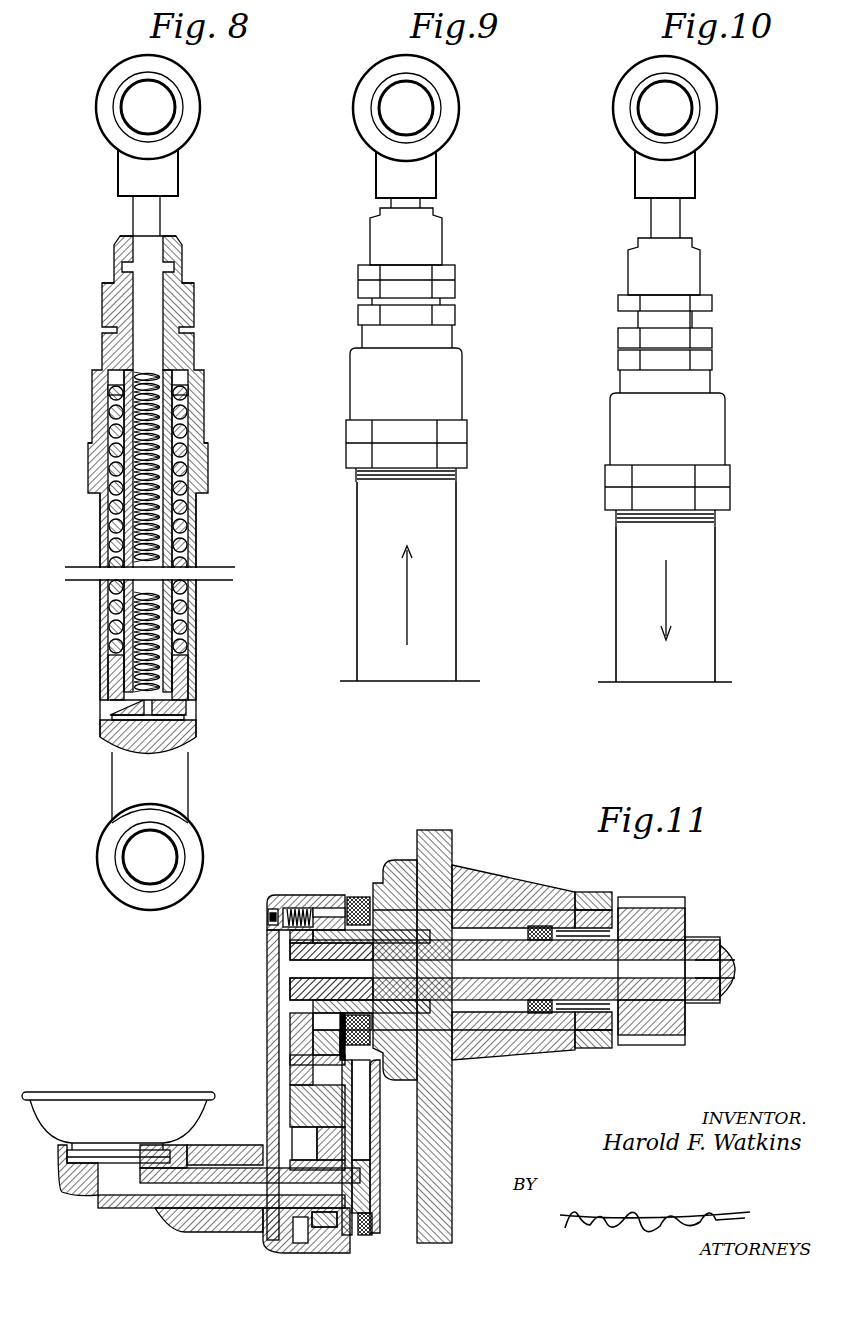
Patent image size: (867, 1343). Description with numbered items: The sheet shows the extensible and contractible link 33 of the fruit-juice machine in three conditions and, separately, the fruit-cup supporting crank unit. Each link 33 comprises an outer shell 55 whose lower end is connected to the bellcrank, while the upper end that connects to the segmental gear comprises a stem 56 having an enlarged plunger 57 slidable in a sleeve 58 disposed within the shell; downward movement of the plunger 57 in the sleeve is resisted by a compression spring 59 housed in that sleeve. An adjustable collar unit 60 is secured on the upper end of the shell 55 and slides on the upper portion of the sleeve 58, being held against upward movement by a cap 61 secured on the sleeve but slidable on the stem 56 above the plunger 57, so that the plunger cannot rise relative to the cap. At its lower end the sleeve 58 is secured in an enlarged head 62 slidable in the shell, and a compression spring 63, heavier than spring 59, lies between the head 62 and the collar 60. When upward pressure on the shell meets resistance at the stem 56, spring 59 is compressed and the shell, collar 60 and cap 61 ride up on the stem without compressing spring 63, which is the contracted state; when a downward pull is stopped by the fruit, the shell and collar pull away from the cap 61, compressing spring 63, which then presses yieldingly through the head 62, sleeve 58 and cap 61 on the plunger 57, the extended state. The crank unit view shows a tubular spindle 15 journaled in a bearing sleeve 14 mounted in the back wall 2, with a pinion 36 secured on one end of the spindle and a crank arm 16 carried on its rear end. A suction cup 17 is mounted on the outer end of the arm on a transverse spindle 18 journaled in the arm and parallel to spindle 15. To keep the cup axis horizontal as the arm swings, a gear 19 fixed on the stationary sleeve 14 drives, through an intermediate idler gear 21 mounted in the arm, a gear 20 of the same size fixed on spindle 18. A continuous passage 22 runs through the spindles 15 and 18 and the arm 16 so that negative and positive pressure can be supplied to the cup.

In FIG. 11, the transverse back wall 2 is at (452, 1142).
In FIG. 11, the bearing sleeve 14 is at (490, 910).
In FIG. 11, the tubular spindle 15 is at (583, 1030).
In FIG. 11, the crank arm 16 is at (290, 1118).
In FIG. 11, the suction cup 17 is at (108, 1110).
In FIG. 11, the transverse spindle 18 is at (158, 1208).
In FIG. 11, the gear 19 is at (325, 910).
In FIG. 11, the gear 20 is at (353, 1223).
In FIG. 11, the intermediate idler gear 21 is at (318, 1118).
In FIG. 11, the continuous passage 22 is at (262, 1150).
In FIG. 8, the upstanding link 33 is at (175, 788).
In FIG. 9, the upstanding link 33 is at (458, 618).
In FIG. 10, the upstanding link 33 is at (718, 628).
In FIG. 11, the pinion 36 is at (670, 918).
In FIG. 8, the outer shell 55 is at (198, 620).
In FIG. 9, the outer shell 55 is at (428, 540).
In FIG. 10, the outer shell 55 is at (700, 575).
In FIG. 8, the stem 56 is at (157, 216).
In FIG. 9, the stem 56 is at (418, 204).
In FIG. 10, the stem 56 is at (670, 220).
In FIG. 8, the enlarged plunger 57 is at (158, 322).
In FIG. 8, the sleeve 58 is at (178, 432).
In FIG. 10, the sleeve 58 is at (680, 318).
In FIG. 8, the compression spring 59 is at (190, 462).
In FIG. 8, the adjustable collar unit 60 is at (196, 382).
In FIG. 9, the adjustable collar unit 60 is at (455, 397).
In FIG. 10, the adjustable collar unit 60 is at (710, 408).
In FIG. 8, the cap 61 is at (185, 260).
In FIG. 9, the cap 61 is at (428, 243).
In FIG. 10, the cap 61 is at (685, 275).
In FIG. 8, the enlarged head 62 is at (180, 672).
In FIG. 8, the compression spring 63 is at (194, 510).